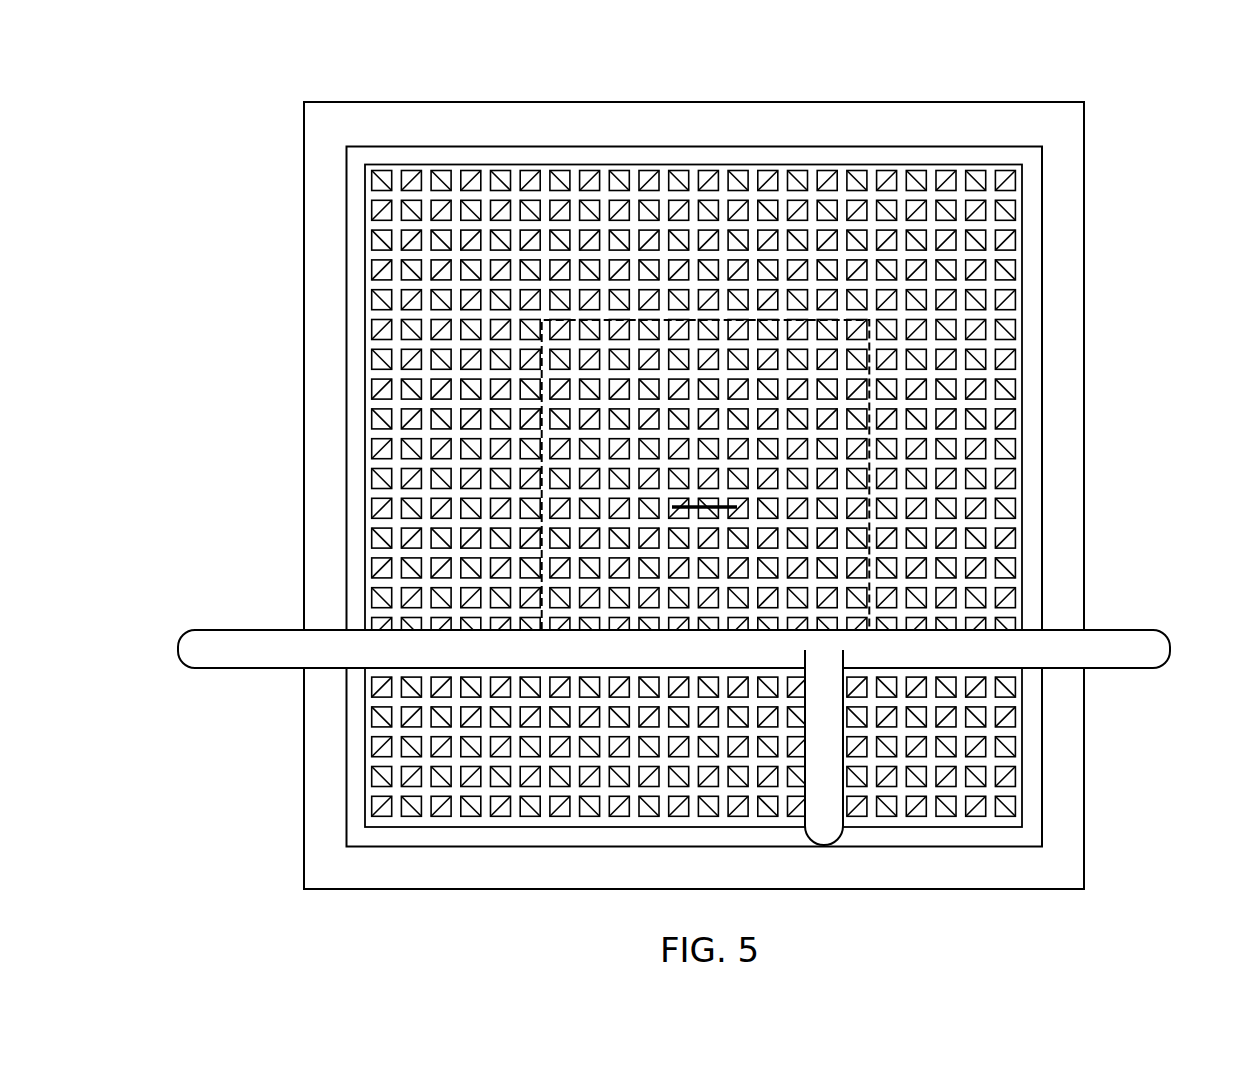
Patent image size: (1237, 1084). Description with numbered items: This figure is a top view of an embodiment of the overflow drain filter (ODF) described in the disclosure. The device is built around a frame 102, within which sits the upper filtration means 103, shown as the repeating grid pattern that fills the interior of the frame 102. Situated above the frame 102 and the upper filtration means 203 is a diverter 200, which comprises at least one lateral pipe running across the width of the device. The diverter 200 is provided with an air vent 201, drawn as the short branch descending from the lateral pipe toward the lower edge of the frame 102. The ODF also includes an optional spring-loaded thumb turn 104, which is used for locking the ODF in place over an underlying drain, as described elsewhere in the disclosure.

The frame 102 is at (970, 102).
The upper filtration means 103 is at (525, 197).
The spring-loaded thumb turn 104 is at (705, 511).
The diverter 200 is at (1138, 670).
The air vent 201 is at (833, 848).
The upper filtration means 203 is at (650, 667).